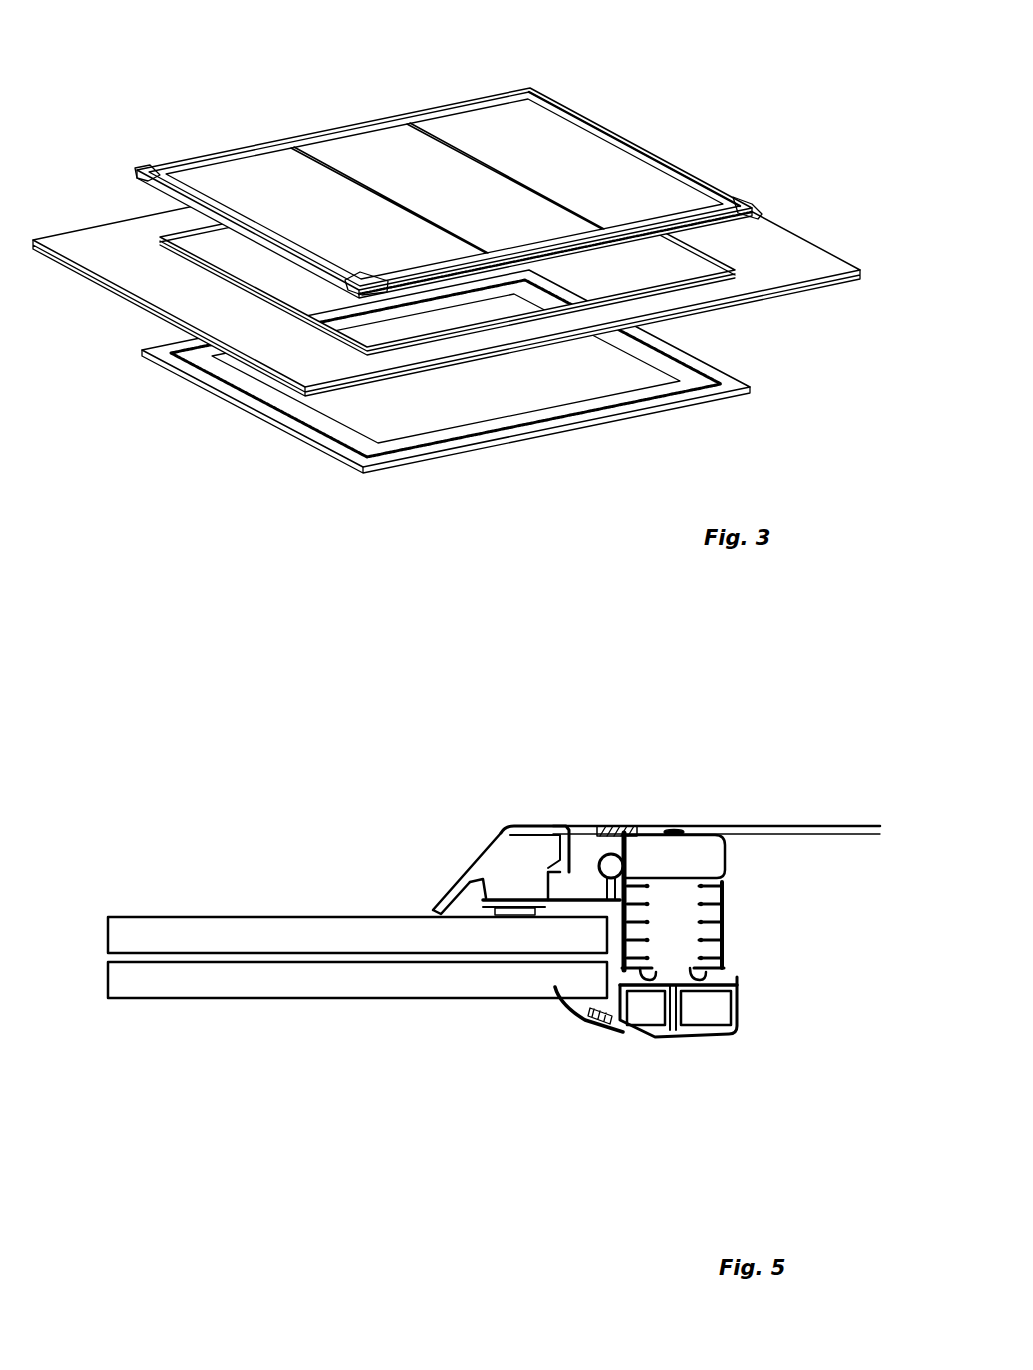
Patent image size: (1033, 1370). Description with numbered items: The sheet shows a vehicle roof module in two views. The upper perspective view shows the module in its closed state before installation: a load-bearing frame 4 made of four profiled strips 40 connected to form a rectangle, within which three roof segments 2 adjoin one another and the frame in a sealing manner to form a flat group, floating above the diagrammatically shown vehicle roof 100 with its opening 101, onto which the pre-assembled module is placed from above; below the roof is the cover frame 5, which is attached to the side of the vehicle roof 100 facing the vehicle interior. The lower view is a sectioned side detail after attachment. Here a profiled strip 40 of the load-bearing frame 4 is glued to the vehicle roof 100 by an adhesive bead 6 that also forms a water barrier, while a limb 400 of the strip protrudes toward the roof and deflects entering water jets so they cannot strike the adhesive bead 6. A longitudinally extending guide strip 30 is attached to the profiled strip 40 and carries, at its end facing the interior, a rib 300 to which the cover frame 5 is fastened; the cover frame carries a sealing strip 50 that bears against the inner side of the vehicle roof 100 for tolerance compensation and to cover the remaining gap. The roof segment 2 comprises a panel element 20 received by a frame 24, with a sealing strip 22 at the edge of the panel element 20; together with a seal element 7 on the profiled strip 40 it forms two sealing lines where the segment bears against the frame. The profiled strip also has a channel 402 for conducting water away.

In FIG. 3, the roof segment 2 is at (308, 215).
In FIG. 5, the roof segment 2 is at (772, 741).
In FIG. 3, the load-bearing frame 4 is at (127, 87).
In FIG. 3, the cover frame 5 is at (350, 457).
In FIG. 5, the cover frame 5 is at (640, 1067).
In FIG. 5, the adhesive bead 6 is at (514, 913).
In FIG. 5, the seal element 7 is at (624, 845).
In FIG. 5, the panel element 20 is at (773, 826).
In FIG. 5, the sealing strip 22 is at (564, 826).
In FIG. 5, the frame 24 is at (693, 845).
In FIG. 5, the guide strip 30 is at (725, 930).
In FIG. 3, the profiled strip 40 is at (643, 146).
In FIG. 5, the sealing strip 50 is at (570, 1013).
In FIG. 3, the vehicle roof 100 is at (446, 313).
In FIG. 5, the vehicle roof 100 is at (161, 870).
In FIG. 3, the opening 101 is at (474, 307).
In FIG. 5, the rib 300 is at (683, 1013).
In FIG. 5, the limb 400 is at (445, 905).
In FIG. 5, the channel 402 is at (596, 852).